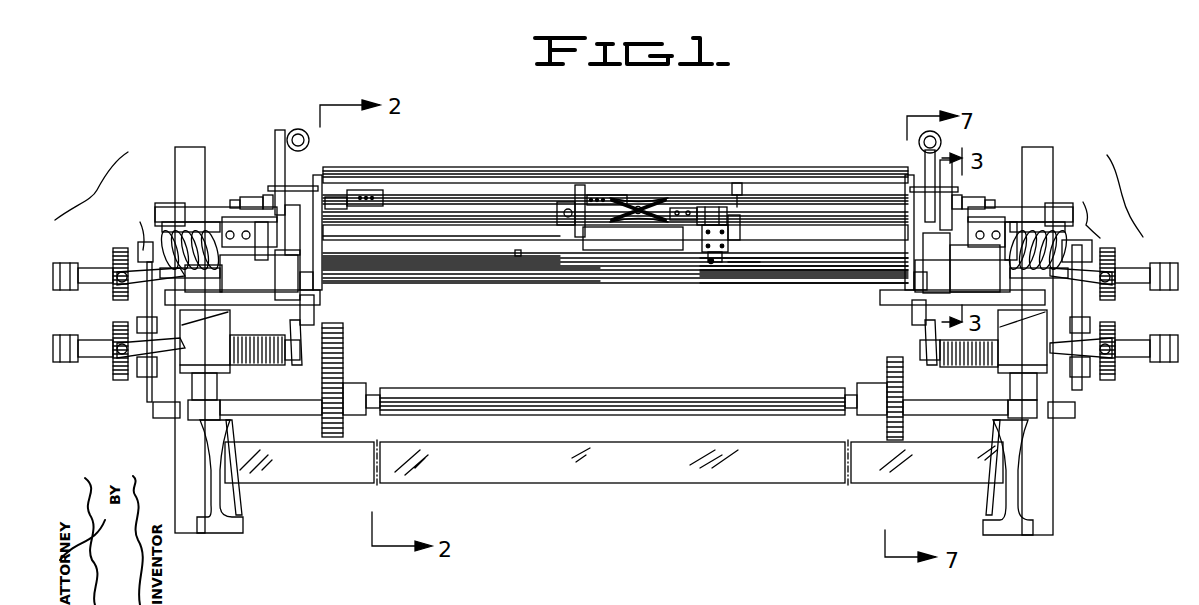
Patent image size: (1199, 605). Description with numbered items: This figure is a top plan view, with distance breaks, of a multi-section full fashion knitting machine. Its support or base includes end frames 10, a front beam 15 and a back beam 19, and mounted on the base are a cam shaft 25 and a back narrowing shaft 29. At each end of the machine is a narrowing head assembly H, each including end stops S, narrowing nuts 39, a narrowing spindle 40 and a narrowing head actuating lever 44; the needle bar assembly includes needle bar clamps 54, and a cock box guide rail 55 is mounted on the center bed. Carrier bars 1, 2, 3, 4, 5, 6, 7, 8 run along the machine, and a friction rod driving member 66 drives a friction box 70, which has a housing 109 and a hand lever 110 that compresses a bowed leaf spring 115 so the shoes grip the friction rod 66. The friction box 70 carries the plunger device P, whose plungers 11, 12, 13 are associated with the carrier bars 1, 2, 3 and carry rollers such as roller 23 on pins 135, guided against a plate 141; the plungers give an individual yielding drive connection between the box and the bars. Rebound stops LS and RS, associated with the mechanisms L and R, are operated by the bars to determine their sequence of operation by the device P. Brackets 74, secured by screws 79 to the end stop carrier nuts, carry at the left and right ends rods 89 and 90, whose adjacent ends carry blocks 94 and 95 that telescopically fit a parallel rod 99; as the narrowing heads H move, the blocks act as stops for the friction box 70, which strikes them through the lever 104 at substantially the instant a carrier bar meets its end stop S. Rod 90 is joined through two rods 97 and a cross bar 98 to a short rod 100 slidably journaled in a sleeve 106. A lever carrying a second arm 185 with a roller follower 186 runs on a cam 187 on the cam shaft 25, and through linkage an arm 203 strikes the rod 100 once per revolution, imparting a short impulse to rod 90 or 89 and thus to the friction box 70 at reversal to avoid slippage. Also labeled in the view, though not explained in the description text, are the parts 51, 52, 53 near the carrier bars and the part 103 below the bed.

The carrier bar 1 is at (397, 254).
The carrier bar 2 is at (867, 258).
The carrier bar 3 is at (410, 258).
The carrier bar 4 is at (830, 266).
The carrier bar 5 is at (808, 270).
The carrier bar 6 is at (797, 270).
The carrier bar 7 is at (782, 276).
The carrier bar 8 is at (765, 283).
The end frame 10 is at (1047, 528).
The plunger 11 is at (704, 210).
The plunger 12 is at (720, 208).
The plunger 13 is at (738, 207).
The front beam 15 is at (668, 470).
The back beam 19 is at (440, 236).
The roller 23 is at (722, 258).
The cam shaft 25 is at (570, 393).
The back narrowing shaft 29 is at (786, 172).
The narrowing nuts 39 is at (1003, 380).
The narrowing spindle 40 is at (962, 367).
The narrowing head actuating lever 44 is at (996, 507).
The stop pin 51 is at (518, 252).
The rail 52 is at (502, 258).
The rail 53 is at (530, 258).
The needle bar clamps 54 is at (1003, 311).
The cock box guide rail 55 is at (1028, 213).
The friction rod driving member 66 is at (402, 218).
The friction box 70 is at (660, 153).
The brackets 74 is at (1033, 212).
The screws 79 is at (998, 237).
The rod 89 is at (333, 203).
The rod 90 is at (802, 202).
The block 94 is at (358, 193).
The block 95 is at (607, 195).
The rods 97 is at (908, 188).
The cross bar 98 is at (928, 190).
The rod 99 is at (433, 197).
The short rod 100 is at (938, 187).
The bar 103 is at (558, 283).
The lever 104 is at (576, 188).
The bearing portion or sleeve 106 is at (978, 198).
The housing 109 is at (617, 238).
The hand lever 110 is at (647, 200).
The bowed leaf spring 115 is at (565, 262).
The pins 135 is at (710, 262).
The plate 141 is at (735, 268).
The second arm 185 is at (920, 323).
The roller follower 186 is at (895, 347).
The cam 187 is at (888, 433).
The arm 203 is at (964, 205).
The narrowing head assembly H is at (601, 228).
The end stops S is at (615, 240).
The selector mechanism L is at (262, 186).
The plunger device P is at (715, 217).
The rebound stop LS is at (310, 278).
The rebound stop RS is at (918, 289).
The selector mechanism R is at (1037, 290).